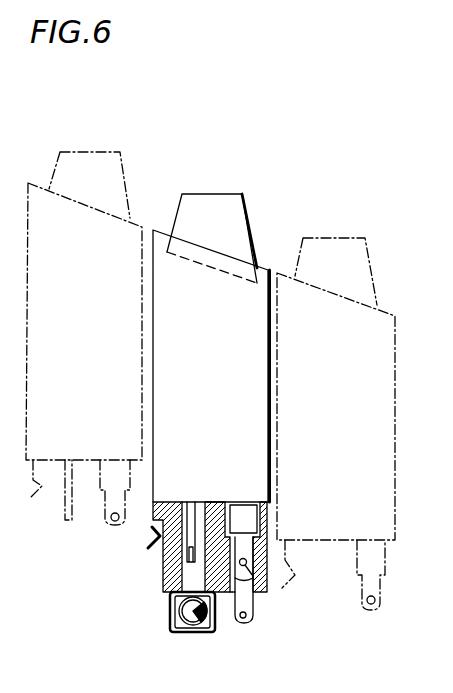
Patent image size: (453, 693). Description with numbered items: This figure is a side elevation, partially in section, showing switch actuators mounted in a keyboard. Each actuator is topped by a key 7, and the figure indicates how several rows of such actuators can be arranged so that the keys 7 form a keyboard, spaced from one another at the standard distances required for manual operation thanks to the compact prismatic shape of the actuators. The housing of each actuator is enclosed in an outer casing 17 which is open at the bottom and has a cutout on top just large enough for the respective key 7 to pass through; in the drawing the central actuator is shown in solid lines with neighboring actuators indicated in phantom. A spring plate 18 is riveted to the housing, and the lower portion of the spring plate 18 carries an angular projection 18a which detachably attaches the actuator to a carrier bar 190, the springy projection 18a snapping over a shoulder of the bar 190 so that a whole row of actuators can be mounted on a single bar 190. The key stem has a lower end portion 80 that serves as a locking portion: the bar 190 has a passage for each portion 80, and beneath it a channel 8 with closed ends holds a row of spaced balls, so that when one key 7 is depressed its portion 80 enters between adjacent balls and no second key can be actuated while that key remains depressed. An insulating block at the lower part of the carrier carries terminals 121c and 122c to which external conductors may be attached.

The key 7 is at (200, 203).
The outer casing 17 is at (258, 267).
The spring plate 18 is at (152, 518).
The angular projection 18a is at (150, 546).
The lower end portion 80 is at (190, 558).
The carrier bar 190 is at (170, 580).
The channel 8 is at (181, 633).
The terminal 121c is at (262, 578).
The terminal 122c is at (243, 620).